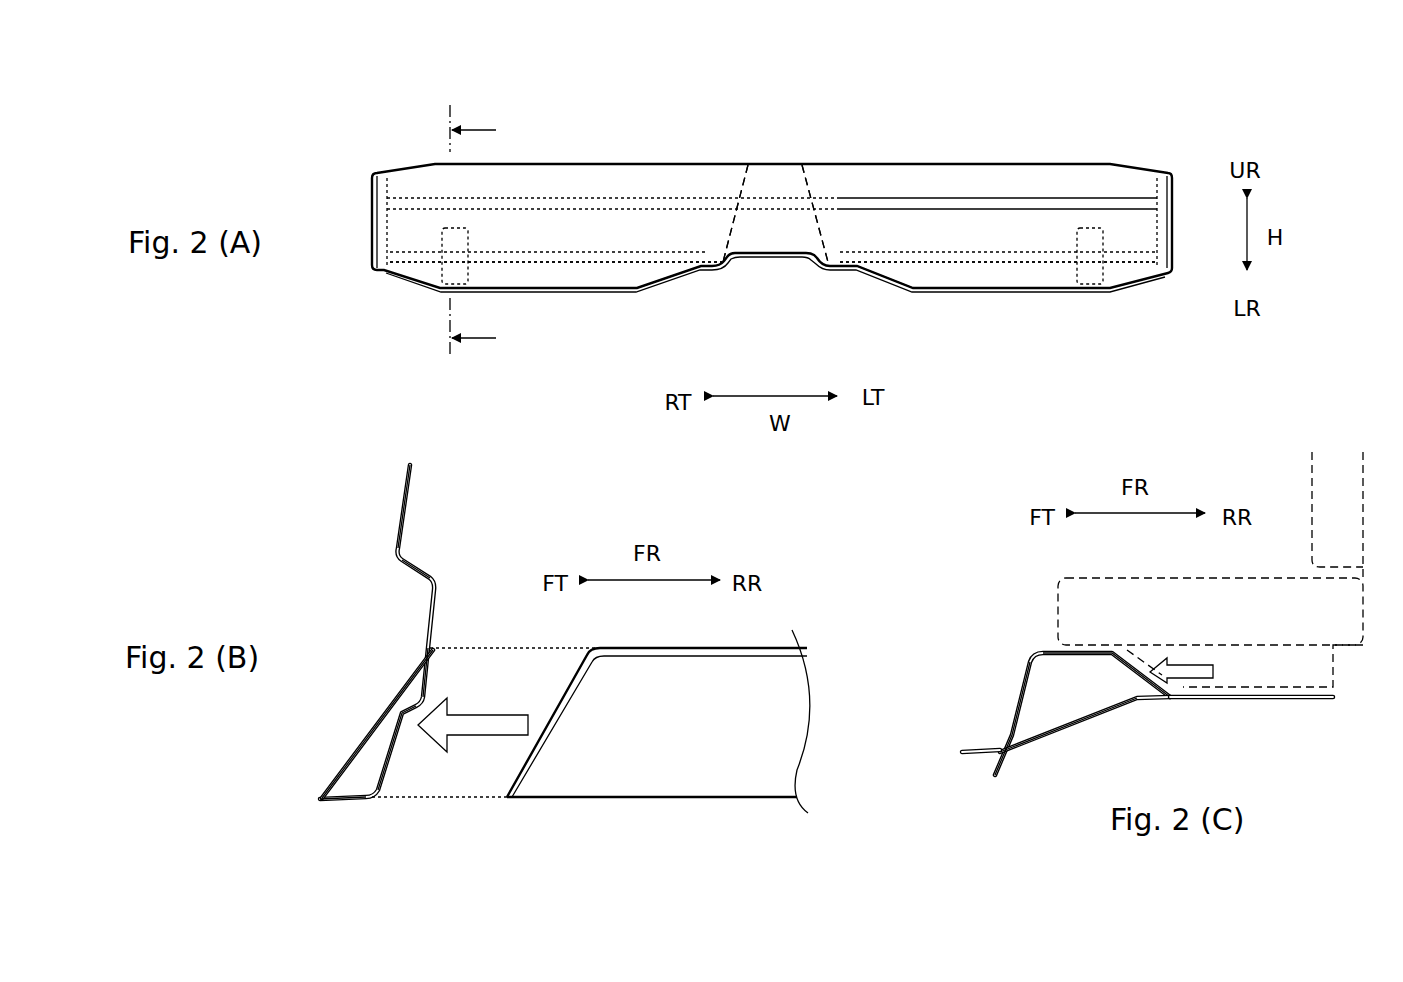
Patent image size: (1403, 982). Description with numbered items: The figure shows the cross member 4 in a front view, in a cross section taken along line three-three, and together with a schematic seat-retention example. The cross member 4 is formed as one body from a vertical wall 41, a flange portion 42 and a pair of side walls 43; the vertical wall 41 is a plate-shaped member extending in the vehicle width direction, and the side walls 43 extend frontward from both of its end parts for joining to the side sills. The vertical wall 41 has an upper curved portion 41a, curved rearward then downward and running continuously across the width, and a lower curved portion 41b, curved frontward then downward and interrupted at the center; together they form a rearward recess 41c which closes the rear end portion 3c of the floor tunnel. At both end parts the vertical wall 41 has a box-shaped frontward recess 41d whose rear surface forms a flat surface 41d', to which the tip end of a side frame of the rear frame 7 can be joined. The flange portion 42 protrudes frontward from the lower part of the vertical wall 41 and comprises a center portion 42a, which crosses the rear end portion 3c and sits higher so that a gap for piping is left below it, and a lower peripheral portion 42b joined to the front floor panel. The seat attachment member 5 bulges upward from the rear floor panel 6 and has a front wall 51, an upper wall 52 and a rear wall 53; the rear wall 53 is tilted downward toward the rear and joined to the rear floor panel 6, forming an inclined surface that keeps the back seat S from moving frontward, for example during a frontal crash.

In FIG. 2A, the cross member 4 is at (336, 201).
In FIG. 2B, the cross member 4 is at (343, 593).
In FIG. 2A, the side walls 43 is at (372, 244).
In FIG. 2A, the vertical wall 41 is at (633, 215).
In FIG. 2B, the vertical wall 41 is at (403, 503).
In FIG. 2A, the rear end portion of the floor tunnel 3c is at (802, 165).
In FIG. 2A, the curved portion 41a is at (953, 203).
In FIG. 2B, the curved portion 41a is at (430, 572).
In FIG. 2A, the rearward recess 41c is at (1022, 233).
In FIG. 2B, the rearward recess 41c is at (430, 670).
In FIG. 2A, the frontward recess 41d is at (743, 291).
In FIG. 2B, the frontward recess 41d is at (375, 724).
In FIG. 2A, the curved portion 41b is at (567, 262).
In FIG. 2B, the curved portion 41b is at (408, 715).
In FIG. 2A, the flange portion 42 is at (612, 290).
In FIG. 2B, the flange portion 42 is at (318, 792).
In FIG. 2A, the peripheral portion 42b is at (703, 280).
In FIG. 2A, the center portion 42a is at (773, 257).
In FIG. 2B, the flat surface 41d' is at (418, 779).
In FIG. 2B, the rear frame 7 is at (608, 799).
In FIG. 2C, the seat attachment member 5 is at (1010, 665).
In FIG. 2C, the front wall 51 is at (1017, 700).
In FIG. 2C, the upper wall 52 is at (1070, 657).
In FIG. 2C, the rear wall 53 is at (1137, 700).
In FIG. 2C, the rear floor panel 6 is at (1275, 699).
In FIG. 2C, the back seat S is at (1058, 612).